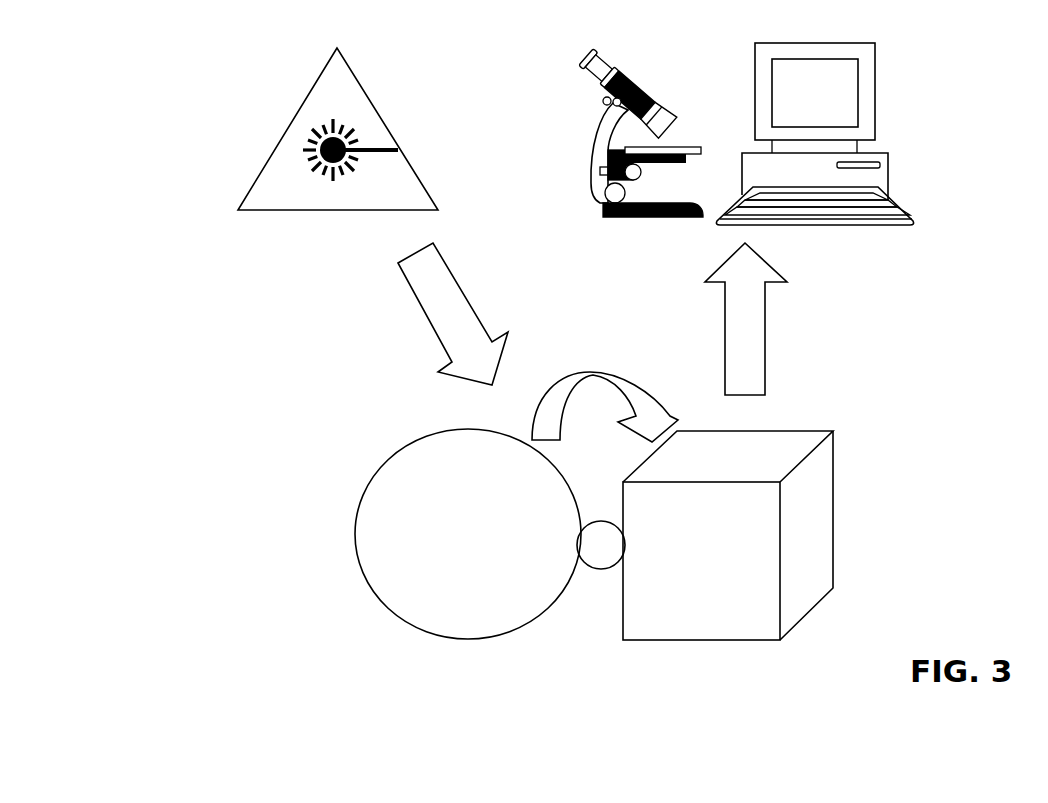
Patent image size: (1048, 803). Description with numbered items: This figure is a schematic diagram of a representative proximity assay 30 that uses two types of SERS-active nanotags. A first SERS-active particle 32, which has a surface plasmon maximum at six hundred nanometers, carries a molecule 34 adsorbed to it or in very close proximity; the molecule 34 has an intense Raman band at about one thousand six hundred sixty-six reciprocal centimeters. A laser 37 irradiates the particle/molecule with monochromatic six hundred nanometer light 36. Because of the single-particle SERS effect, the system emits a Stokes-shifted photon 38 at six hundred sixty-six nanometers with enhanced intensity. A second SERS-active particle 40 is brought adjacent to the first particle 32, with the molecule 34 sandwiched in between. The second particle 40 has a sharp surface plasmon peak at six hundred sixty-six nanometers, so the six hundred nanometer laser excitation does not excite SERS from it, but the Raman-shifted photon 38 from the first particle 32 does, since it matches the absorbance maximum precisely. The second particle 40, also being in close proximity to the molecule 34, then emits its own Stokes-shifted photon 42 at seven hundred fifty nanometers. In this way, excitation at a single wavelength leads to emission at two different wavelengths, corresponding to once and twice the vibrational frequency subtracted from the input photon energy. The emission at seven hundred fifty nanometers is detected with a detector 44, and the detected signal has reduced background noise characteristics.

The proximity assay 30 is at (932, 289).
The first SERS-active particle 32 is at (483, 615).
The molecule 34 is at (600, 557).
The monochromatic 600 nm light 36 is at (438, 312).
The laser 37 is at (285, 162).
The Stokes-shifted photon 38 is at (558, 395).
The second SERS-active particle 40 is at (810, 547).
The Stokes-shifted photon 42 is at (750, 313).
The detector 44 is at (895, 126).